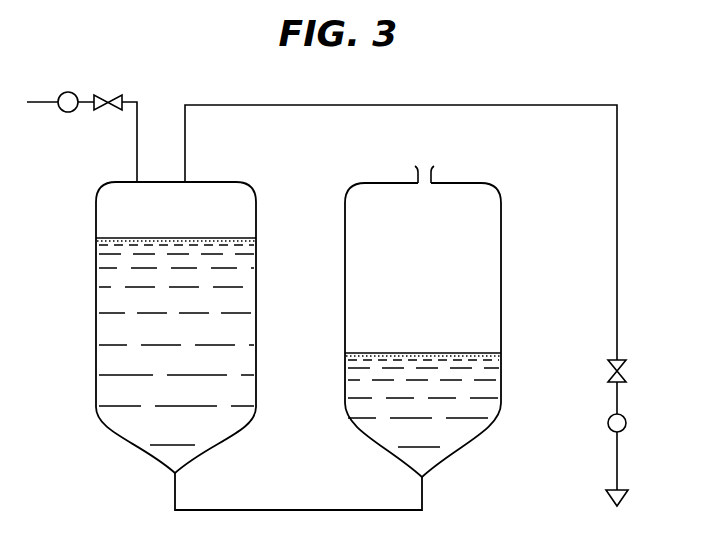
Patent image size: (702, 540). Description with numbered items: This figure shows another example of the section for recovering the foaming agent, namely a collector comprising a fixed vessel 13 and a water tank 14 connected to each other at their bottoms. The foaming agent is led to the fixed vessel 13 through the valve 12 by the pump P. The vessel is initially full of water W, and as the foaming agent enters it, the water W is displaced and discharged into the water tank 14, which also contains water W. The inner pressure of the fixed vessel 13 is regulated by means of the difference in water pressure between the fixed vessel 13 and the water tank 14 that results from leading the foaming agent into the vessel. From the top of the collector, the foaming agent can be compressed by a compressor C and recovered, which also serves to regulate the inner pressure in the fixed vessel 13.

The pump P is at (64, 112).
The valve 12 is at (110, 112).
The fixed vessel 13 is at (219, 182).
The water tank 14 is at (501, 232).
The water W is at (133, 393).
The compressor C is at (625, 421).